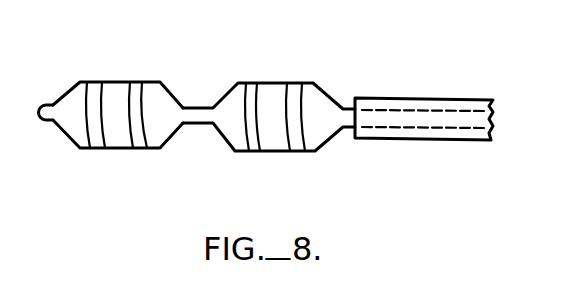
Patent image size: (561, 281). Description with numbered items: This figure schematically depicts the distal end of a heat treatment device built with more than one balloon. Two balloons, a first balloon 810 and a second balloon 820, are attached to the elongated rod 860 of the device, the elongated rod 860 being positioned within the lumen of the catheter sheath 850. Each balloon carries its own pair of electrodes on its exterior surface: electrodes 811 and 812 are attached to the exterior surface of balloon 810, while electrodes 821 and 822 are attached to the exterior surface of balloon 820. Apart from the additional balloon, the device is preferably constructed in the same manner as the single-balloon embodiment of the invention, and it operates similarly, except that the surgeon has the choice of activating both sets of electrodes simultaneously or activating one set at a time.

The balloon 810 is at (123, 157).
The electrode 811 is at (100, 82).
The electrode 812 is at (142, 80).
The balloon 820 is at (278, 159).
The electrode 821 is at (257, 83).
The electrode 822 is at (295, 83).
The catheter sheath 850 is at (393, 97).
The elongated rod 860 is at (391, 127).